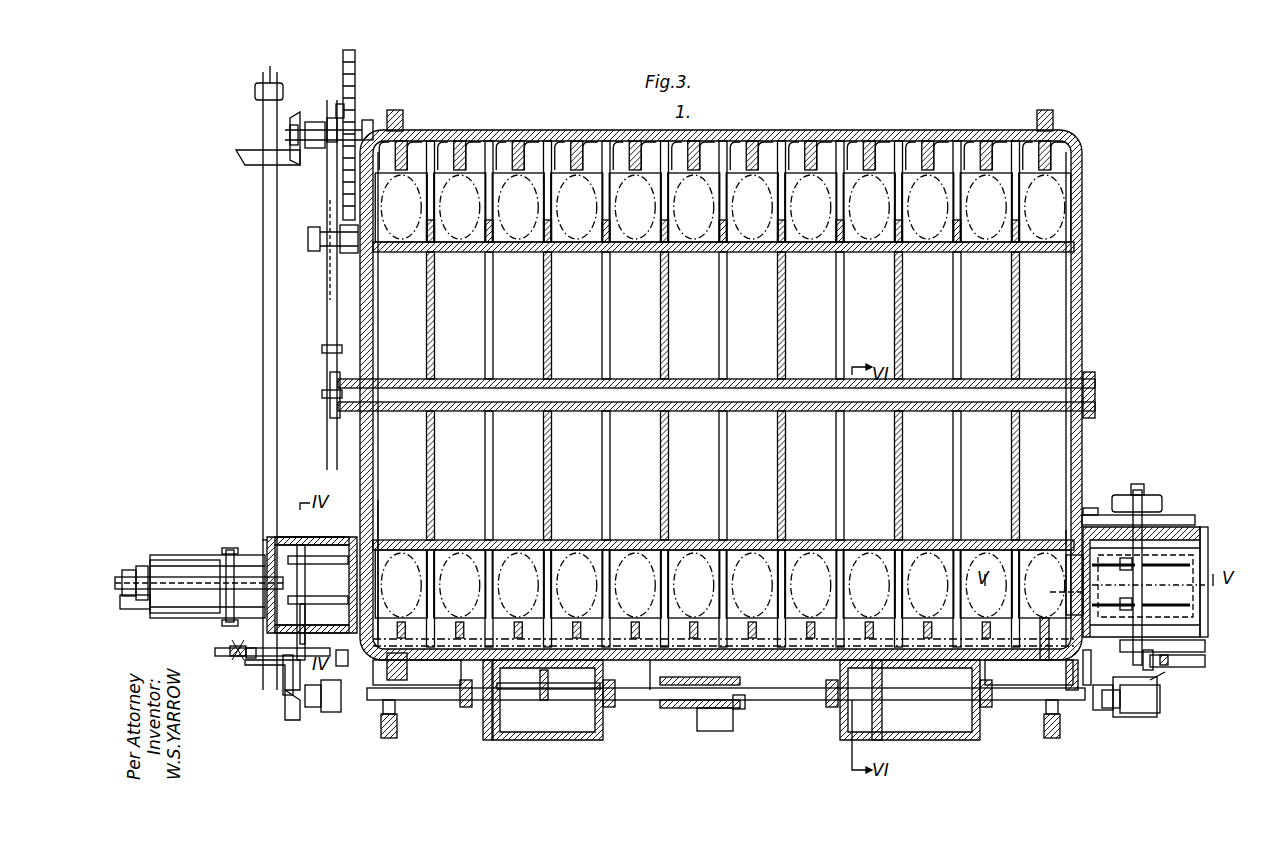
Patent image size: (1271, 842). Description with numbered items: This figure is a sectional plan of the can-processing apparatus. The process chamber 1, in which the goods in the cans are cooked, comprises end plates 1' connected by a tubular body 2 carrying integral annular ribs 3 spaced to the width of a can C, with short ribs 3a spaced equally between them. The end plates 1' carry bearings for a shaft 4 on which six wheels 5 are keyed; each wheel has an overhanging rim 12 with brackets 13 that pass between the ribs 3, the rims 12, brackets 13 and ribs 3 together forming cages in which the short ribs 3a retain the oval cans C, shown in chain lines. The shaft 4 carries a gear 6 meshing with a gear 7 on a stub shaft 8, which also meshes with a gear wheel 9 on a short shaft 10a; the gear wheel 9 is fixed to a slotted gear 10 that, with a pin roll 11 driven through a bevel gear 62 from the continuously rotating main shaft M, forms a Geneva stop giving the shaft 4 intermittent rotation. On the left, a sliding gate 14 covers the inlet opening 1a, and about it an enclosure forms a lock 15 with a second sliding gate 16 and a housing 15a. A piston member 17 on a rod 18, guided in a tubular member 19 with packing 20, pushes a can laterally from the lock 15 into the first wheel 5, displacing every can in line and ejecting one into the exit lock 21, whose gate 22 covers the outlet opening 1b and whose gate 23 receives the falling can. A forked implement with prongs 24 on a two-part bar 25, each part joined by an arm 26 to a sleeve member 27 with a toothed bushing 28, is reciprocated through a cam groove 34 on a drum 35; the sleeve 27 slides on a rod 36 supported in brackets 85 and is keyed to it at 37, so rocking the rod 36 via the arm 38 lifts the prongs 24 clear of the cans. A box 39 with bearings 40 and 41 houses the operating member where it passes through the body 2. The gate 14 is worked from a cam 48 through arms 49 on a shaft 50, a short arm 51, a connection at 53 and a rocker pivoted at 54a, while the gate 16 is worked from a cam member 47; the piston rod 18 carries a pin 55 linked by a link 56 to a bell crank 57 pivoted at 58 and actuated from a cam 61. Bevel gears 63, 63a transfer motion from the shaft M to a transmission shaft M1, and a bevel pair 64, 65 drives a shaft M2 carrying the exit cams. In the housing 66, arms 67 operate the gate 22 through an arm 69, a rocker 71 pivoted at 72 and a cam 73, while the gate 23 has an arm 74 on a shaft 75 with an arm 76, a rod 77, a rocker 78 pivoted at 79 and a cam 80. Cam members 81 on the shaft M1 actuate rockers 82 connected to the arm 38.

The process chamber 1 is at (721, 395).
The end plates 1' is at (748, 398).
The inlet opening 1a is at (378, 515).
The outlet opening 1b is at (1066, 538).
The tubular body 2 is at (1040, 130).
The annular ribs 3 is at (598, 150).
The short ribs 3a is at (455, 145).
The shaft 4 is at (908, 388).
The wheels 5 is at (436, 326).
The gear 6 is at (322, 348).
The gear 7 is at (326, 280).
The stub shaft 8 is at (308, 240).
The gear wheel 9 is at (312, 125).
The slotted gear 10 is at (352, 100).
The short shaft 10a is at (370, 120).
The pin roll 11 is at (338, 108).
The overhanging rims 12 is at (580, 252).
The brackets 13 is at (418, 238).
The sliding gate 14 is at (345, 580).
The lock 15 is at (298, 650).
The housing 15a is at (318, 591).
The second sliding gate 16 is at (305, 536).
The piston member 17 is at (270, 537).
The rod 18 is at (142, 566).
The tubular member 19 is at (128, 570).
The packing 20 is at (118, 580).
The lock 21 is at (1190, 540).
The sliding gate 22 is at (1075, 592).
The sliding gate 23 is at (1195, 556).
The prongs 24 is at (478, 636).
The bar 25 is at (503, 642).
The arm 26 is at (488, 700).
The sleeve member 27 is at (770, 700).
The bushing 28 is at (690, 710).
The cam groove 34 is at (740, 710).
The drum 35 is at (715, 731).
The rod 36 is at (650, 702).
The key 37 is at (545, 700).
The arm 38 is at (395, 707).
The box 39 is at (570, 725).
The bearing 40 is at (464, 708).
The bearing 41 is at (612, 708).
The cam member 47 is at (236, 658).
The cam 48 is at (250, 660).
The arms 49 is at (330, 537).
The shaft 50 is at (306, 617).
The short arm 51 is at (288, 695).
The hinged connection 53 is at (345, 666).
The pivot 54a is at (222, 655).
The pin 55 is at (135, 608).
The link 56 is at (160, 560).
The bell crank 57 is at (190, 555).
The pivot 58 is at (230, 548).
The cam 61 is at (265, 538).
The bevel gear 62 is at (255, 150).
The bevel gear 63 is at (262, 665).
The bevel gear 63a is at (292, 720).
The bevel gear 64 is at (1125, 718).
The bevel gear 65 is at (1158, 675).
The housing 66 is at (1070, 566).
The arms 67 is at (1105, 575).
The arm 69 is at (1150, 495).
The rocker 71 is at (1095, 508).
The pivot 72 is at (1090, 515).
The cam 73 is at (1136, 492).
The arm 74 is at (1150, 568).
The shaft 75 is at (1205, 648).
The arm 76 is at (1148, 670).
The rod 77 is at (1165, 667).
The rocker 78 is at (1195, 667).
The pivot 79 is at (1087, 688).
The cam 80 is at (1053, 639).
The cam members 81 is at (395, 677).
The rockers 82 is at (385, 735).
The brackets 85 is at (392, 650).
The can C is at (723, 396).
The main shaft M is at (262, 290).
The transmission shaft M1 is at (330, 712).
The shaft M2 is at (1140, 484).